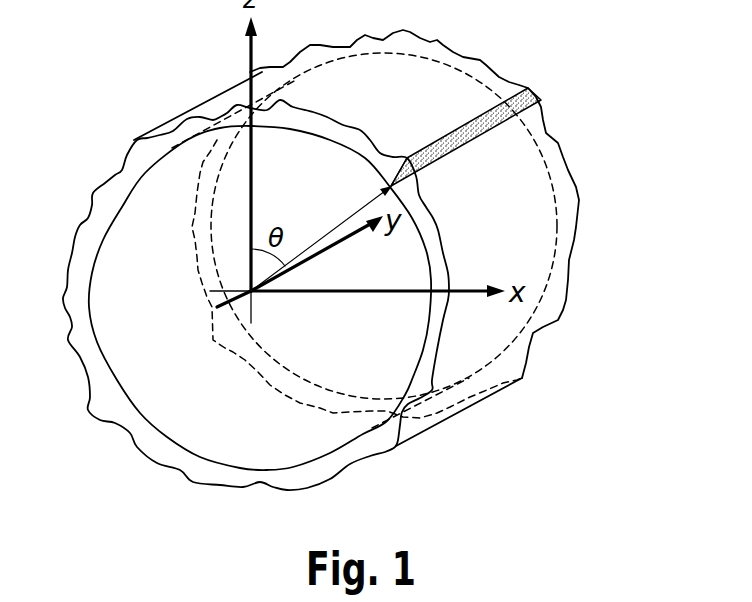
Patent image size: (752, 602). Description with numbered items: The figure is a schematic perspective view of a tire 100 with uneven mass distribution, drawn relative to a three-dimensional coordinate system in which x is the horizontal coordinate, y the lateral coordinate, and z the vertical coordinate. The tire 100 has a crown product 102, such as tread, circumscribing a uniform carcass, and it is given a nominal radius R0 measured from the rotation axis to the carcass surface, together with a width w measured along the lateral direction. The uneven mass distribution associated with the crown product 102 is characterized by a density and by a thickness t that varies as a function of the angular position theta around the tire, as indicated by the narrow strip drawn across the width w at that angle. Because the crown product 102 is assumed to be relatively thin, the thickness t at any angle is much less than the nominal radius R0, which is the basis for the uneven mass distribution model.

The tire 100 is at (103, 97).
The crown product 102 is at (579, 228).
The width w is at (525, 385).
The thickness t is at (387, 131).
The nominal radius R0 is at (321, 238).